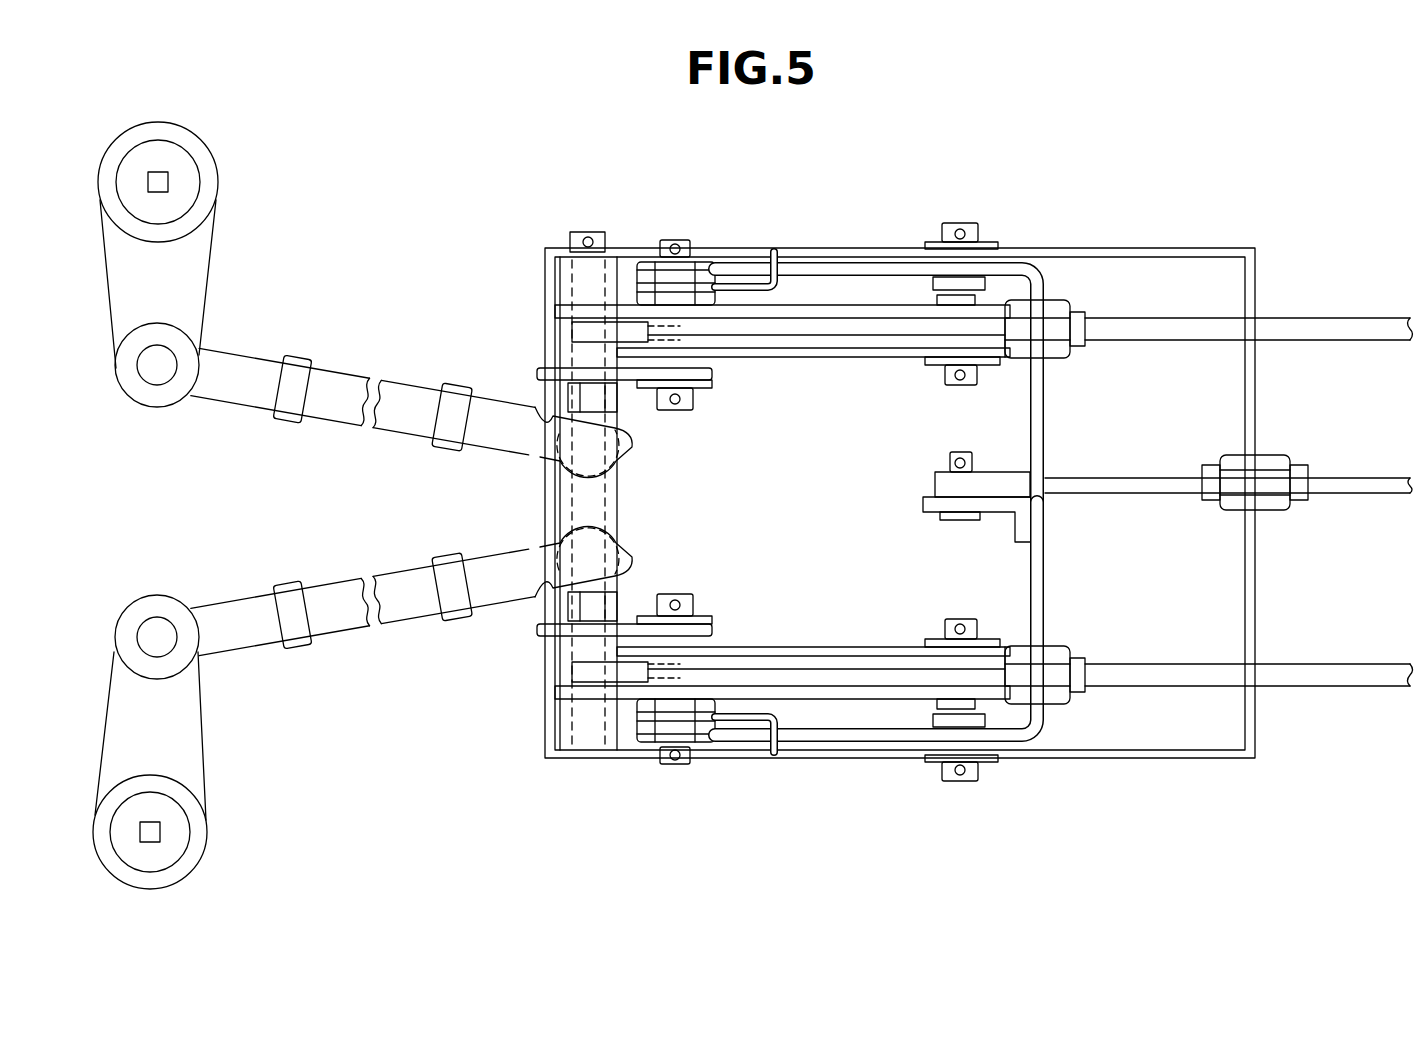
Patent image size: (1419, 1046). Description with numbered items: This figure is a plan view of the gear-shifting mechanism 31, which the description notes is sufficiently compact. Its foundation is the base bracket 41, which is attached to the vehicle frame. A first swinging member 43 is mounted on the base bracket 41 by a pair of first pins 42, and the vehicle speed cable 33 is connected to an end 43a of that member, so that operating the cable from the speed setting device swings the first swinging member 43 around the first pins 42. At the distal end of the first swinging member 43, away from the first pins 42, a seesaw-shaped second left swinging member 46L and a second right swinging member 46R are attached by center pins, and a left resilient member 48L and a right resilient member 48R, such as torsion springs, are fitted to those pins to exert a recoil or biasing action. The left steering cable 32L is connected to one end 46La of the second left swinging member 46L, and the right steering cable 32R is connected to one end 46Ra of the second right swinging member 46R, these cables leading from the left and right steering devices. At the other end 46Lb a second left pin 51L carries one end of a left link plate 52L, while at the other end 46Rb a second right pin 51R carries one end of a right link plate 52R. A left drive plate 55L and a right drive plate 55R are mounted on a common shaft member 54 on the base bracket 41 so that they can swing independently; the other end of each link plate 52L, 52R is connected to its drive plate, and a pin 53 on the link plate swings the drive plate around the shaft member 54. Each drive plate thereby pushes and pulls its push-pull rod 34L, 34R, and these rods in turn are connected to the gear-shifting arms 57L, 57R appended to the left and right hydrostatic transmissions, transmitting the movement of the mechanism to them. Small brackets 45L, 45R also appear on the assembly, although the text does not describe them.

The gear-shifting mechanism 31 is at (936, 135).
The left steering cable 32L is at (1352, 344).
The right steering cable 32R is at (1350, 688).
The vehicle speed cable 33 is at (1350, 500).
The left push-pull rod 34L is at (400, 396).
The right push-pull rod 34R is at (415, 600).
The base bracket 41 is at (1082, 250).
The first pin 42 is at (962, 222).
The first swinging member 43 is at (890, 268).
The end of first swinging member 43a is at (995, 505).
The left spring bracket 45L is at (676, 240).
The right spring bracket 45R is at (682, 805).
The second left swinging member 46L is at (830, 318).
The second right swinging member 46R is at (840, 690).
The one end of second left swinging member 46La is at (592, 308).
The other end of second left swinging member 46Lb is at (962, 312).
The one end of second right swinging member 46Ra is at (598, 692).
The other end of second right swinging member 46Rb is at (962, 695).
The left resilient member 48L is at (772, 245).
The right resilient member 48R is at (772, 760).
The second left pin 51L is at (947, 378).
The second right pin 51R is at (955, 620).
The left link plate 52L is at (837, 357).
The right link plate 52R is at (822, 648).
The pin 53 is at (682, 410).
The shaft member 54 is at (585, 232).
The left drive plate 55L is at (535, 370).
The right drive plate 55R is at (535, 638).
The gear-shifting arm 57L is at (193, 262).
The gear-shifting arm 57R is at (193, 738).